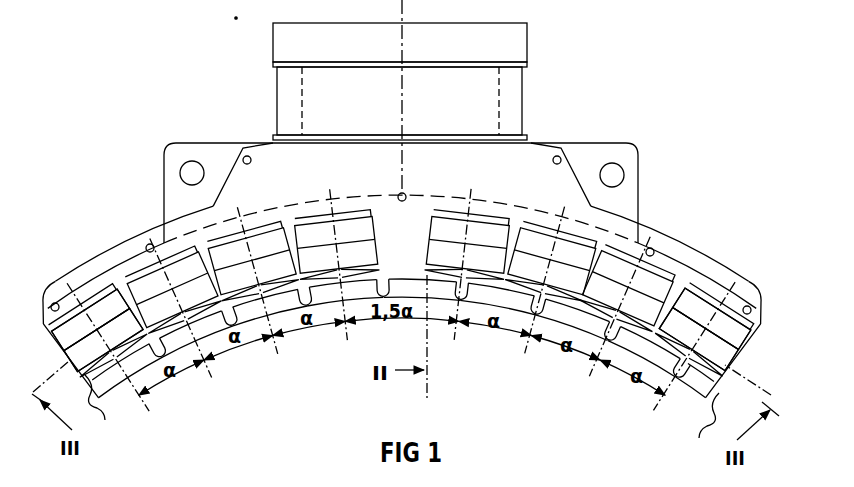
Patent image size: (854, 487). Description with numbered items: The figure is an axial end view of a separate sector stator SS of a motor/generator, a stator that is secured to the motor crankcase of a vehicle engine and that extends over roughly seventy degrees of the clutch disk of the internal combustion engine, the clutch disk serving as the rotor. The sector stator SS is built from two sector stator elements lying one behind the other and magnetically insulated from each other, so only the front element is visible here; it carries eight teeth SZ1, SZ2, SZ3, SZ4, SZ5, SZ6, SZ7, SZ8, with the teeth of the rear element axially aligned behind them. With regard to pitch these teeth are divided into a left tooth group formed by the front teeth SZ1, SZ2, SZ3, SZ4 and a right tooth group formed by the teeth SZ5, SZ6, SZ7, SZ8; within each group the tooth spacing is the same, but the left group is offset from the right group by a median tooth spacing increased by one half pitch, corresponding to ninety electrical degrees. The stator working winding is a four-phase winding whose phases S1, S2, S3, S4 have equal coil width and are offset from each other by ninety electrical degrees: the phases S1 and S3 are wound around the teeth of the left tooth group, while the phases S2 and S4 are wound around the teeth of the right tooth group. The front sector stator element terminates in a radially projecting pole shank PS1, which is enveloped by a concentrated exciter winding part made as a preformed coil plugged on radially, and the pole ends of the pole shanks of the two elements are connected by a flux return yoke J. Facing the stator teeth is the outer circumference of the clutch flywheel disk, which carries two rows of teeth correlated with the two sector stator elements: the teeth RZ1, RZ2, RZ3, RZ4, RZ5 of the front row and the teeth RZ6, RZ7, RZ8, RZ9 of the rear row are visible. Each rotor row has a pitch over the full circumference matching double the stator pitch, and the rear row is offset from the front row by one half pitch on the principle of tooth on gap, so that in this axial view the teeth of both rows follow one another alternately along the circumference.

The flux return yoke J is at (515, 42).
The pole shank PS1 is at (500, 103).
The sector stator SS is at (530, 157).
The tooth SZ1 is at (92, 305).
The tooth SZ2 is at (160, 262).
The tooth SZ3 is at (243, 230).
The tooth SZ4 is at (337, 230).
The tooth SZ5 is at (480, 232).
The tooth SZ6 is at (560, 240).
The tooth SZ7 is at (650, 277).
The tooth SZ8 is at (706, 316).
The phase S1 is at (65, 340).
The phase S3 is at (75, 353).
The phase S2 is at (727, 342).
The phase S4 is at (722, 362).
The tooth RZ1 is at (108, 372).
The tooth RZ2 is at (262, 310).
The tooth RZ3 is at (437, 290).
The tooth RZ4 is at (572, 318).
The tooth RZ5 is at (707, 393).
The tooth RZ6 is at (190, 335).
The tooth RZ7 is at (330, 290).
The tooth RZ8 is at (497, 297).
The tooth RZ9 is at (655, 355).